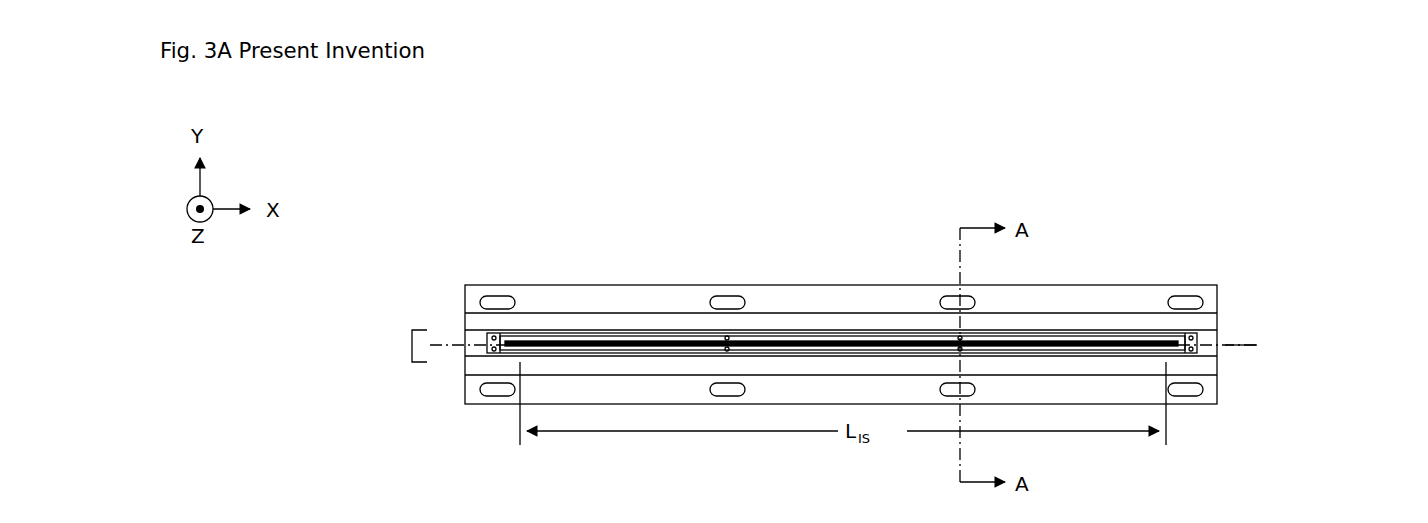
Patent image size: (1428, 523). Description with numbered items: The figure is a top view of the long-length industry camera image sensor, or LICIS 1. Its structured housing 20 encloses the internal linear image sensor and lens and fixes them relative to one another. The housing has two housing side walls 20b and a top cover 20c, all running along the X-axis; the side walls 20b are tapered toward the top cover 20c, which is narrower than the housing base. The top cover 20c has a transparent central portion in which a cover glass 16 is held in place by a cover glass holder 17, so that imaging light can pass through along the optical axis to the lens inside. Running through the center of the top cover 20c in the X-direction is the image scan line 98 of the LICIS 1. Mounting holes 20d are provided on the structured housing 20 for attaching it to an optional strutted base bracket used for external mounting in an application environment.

The long-length industry camera image sensor (LICIS) 1 is at (1278, 137).
The cover glass 16 is at (901, 343).
The cover glass holder 17 is at (777, 333).
The structured housing 20 is at (1113, 293).
The housing side walls 20b is at (607, 322).
The top cover 20c is at (400, 347).
The mounting holes 20d is at (500, 303).
The image scan line 98 is at (1247, 341).